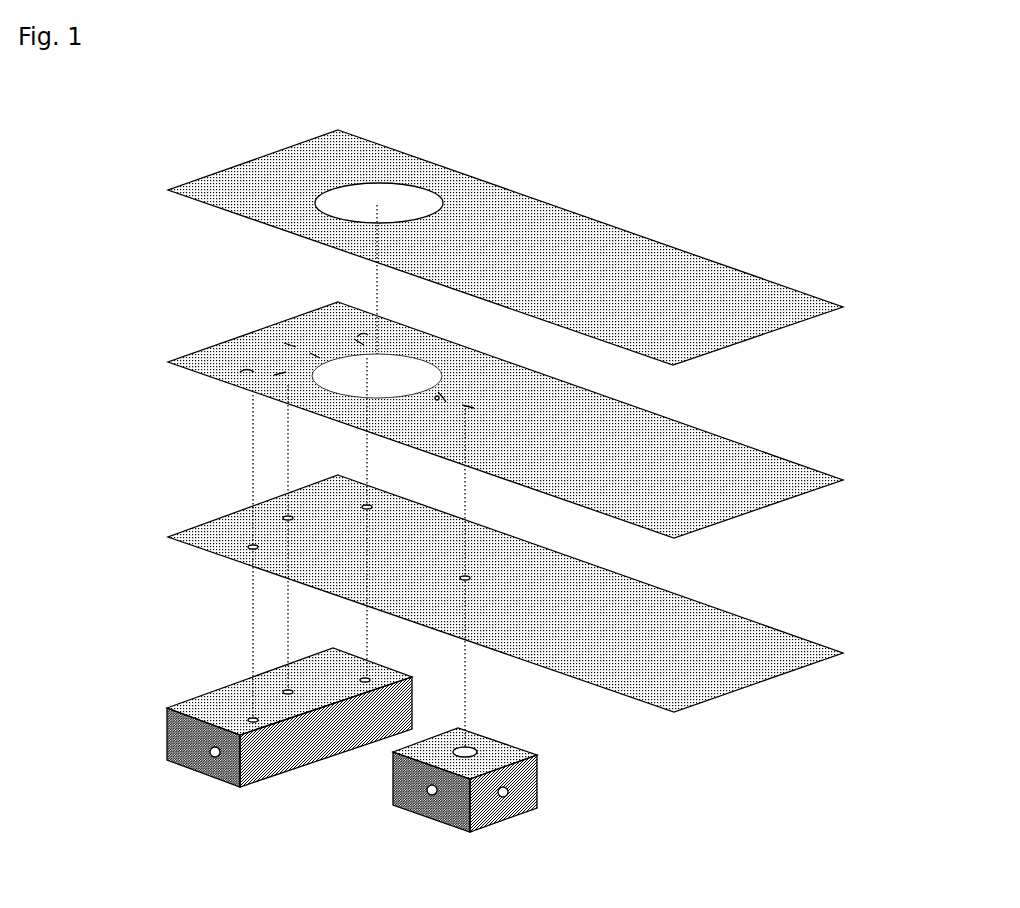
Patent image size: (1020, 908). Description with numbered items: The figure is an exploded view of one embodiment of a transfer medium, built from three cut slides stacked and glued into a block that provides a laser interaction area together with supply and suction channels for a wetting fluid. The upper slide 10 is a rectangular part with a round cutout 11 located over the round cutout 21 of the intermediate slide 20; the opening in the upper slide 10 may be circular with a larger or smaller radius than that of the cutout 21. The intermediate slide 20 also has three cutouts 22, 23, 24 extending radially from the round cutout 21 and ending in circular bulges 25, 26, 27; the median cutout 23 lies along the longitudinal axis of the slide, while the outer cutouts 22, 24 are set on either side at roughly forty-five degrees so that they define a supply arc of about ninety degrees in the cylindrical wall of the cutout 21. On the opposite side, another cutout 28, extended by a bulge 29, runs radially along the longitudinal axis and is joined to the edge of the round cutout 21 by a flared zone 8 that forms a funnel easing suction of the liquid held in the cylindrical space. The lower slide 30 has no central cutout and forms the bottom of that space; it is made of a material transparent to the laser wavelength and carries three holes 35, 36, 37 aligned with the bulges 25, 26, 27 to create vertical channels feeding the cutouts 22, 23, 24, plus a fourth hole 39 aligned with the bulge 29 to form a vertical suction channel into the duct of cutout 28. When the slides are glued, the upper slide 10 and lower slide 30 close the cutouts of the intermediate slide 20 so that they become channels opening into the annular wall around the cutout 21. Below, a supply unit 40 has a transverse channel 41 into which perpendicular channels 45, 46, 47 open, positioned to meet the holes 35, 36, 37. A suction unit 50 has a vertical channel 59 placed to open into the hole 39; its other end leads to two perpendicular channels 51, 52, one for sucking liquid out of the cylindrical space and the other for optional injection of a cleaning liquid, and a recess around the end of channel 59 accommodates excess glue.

The flared zone 8 is at (443, 400).
The upper slide 10 is at (778, 310).
The round cutout 11 is at (415, 197).
The intermediate slide 20 is at (755, 467).
The round cutout 21 is at (393, 368).
The cutout 22 is at (280, 374).
The cutout 23 is at (318, 357).
The cutout 24 is at (360, 342).
The circular bulge 25 is at (252, 370).
The circular bulge 26 is at (290, 345).
The circular bulge 27 is at (360, 333).
The cutout 28 is at (437, 397).
The bulge 29 is at (470, 407).
The lower slide 30 is at (732, 655).
The hole 35 is at (252, 548).
The hole 36 is at (285, 518).
The hole 37 is at (363, 508).
The fourth hole 39 is at (463, 580).
The supply unit 40 is at (188, 743).
The transverse channel 41 is at (213, 753).
The perpendicular channel 45 is at (260, 723).
The perpendicular channel 46 is at (292, 693).
The perpendicular channel 47 is at (370, 680).
The suction unit 50 is at (405, 788).
The perpendicular channel 51 is at (430, 793).
The perpendicular channel 52 is at (512, 793).
The vertical channel 59 is at (473, 753).